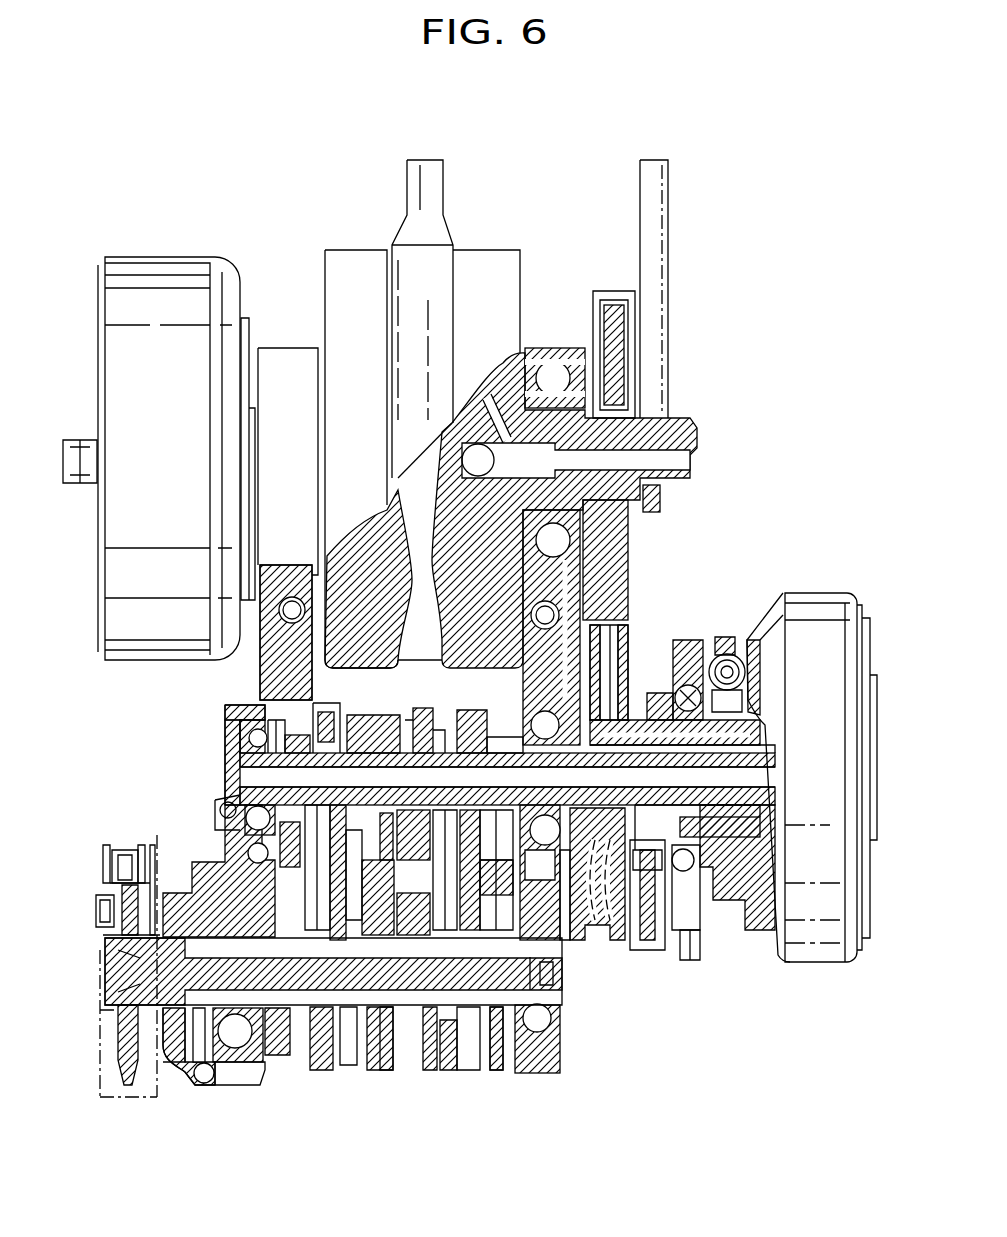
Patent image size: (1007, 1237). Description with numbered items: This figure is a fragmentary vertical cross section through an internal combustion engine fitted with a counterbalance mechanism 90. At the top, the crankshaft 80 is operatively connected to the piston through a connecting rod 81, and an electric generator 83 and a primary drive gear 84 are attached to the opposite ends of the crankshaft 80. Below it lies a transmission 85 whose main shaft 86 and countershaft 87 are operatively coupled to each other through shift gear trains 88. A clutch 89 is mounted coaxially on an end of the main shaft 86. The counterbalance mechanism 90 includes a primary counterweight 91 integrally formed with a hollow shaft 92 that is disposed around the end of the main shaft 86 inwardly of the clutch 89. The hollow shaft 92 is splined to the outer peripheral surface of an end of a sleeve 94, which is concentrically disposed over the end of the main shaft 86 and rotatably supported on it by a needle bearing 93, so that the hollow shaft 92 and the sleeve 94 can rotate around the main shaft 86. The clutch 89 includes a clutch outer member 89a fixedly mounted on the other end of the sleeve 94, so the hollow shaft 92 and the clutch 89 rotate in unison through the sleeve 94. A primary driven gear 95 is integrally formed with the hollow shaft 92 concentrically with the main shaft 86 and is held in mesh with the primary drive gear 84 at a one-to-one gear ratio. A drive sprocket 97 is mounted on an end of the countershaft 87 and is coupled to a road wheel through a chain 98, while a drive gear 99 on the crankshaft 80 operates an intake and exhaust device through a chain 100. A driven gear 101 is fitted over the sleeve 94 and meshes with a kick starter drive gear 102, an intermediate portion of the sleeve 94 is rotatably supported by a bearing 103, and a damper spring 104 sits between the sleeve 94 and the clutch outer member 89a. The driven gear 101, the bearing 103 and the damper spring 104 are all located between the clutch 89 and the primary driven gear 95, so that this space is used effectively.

The crankshaft 80 is at (700, 488).
The connecting rod 81 is at (445, 190).
The electric generator 83 is at (238, 252).
The primary drive gear 84 is at (634, 540).
The transmission 85 is at (416, 1055).
The main shaft 86 is at (500, 740).
The countershaft 87 is at (548, 1005).
The shift gear trains 88 is at (406, 722).
The clutch 89 is at (855, 590).
The clutch outer member 89a is at (745, 640).
The counterbalance mechanism 90 is at (625, 962).
The primary counterweight 91 is at (572, 945).
The hollow shaft 92 is at (575, 938).
The needle bearing 93 is at (660, 705).
The sleeve 94 is at (684, 652).
The primary driven gear 95 is at (628, 632).
The drive sprocket 97 is at (100, 1047).
The chain 98 is at (100, 1010).
The drive gear 99 is at (688, 515).
The chain 100 is at (673, 292).
The driven gear 101 is at (660, 948).
The kick starter drive gear 102 is at (692, 963).
The bearing 103 is at (690, 928).
The damper spring 104 is at (724, 648).